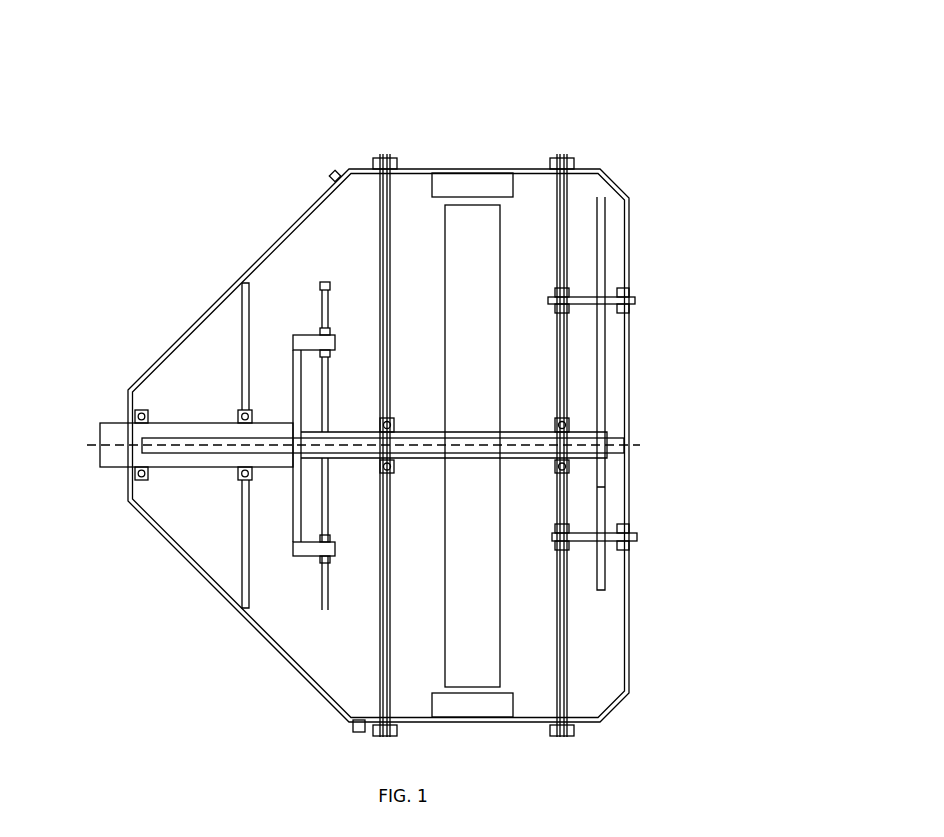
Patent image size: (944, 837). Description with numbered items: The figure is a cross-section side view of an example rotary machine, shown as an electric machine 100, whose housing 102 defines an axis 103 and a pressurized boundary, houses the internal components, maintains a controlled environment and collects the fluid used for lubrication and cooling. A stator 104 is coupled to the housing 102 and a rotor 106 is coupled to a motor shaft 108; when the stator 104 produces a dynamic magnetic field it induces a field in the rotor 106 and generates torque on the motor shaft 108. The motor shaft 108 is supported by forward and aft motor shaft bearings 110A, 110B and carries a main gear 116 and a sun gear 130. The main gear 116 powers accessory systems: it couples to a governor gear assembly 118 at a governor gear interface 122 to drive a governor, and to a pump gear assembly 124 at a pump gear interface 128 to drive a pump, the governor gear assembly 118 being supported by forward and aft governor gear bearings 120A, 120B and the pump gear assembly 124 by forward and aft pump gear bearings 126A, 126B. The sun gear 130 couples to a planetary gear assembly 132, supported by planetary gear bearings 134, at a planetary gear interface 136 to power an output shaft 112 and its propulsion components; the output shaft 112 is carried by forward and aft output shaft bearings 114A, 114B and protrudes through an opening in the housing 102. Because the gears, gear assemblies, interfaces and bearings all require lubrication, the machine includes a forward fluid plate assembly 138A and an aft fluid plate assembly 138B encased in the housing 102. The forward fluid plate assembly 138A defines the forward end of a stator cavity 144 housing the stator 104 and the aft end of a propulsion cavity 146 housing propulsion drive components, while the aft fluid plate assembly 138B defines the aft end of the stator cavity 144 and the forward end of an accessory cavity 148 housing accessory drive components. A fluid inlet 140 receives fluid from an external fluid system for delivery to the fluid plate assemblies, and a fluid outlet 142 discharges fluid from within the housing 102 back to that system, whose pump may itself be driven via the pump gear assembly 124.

The electric machine 100 is at (604, 54).
The housing 102 is at (615, 180).
The axis 103 is at (97, 445).
The stator 104 is at (468, 182).
The rotor 106 is at (482, 575).
The motor shaft 108 is at (325, 457).
The forward motor shaft bearing 110A is at (395, 423).
The aft motor shaft bearing 110B is at (563, 425).
The output shaft 112 is at (295, 418).
The forward output shaft bearing 114A is at (138, 412).
The aft output shaft bearing 114B is at (243, 414).
The main gear 116 is at (603, 430).
The governor gear assembly 118 is at (635, 300).
The forward governor gear bearing 120A is at (567, 292).
The aft governor gear bearing 120B is at (617, 290).
The governor gear interface 122 is at (620, 399).
The pump gear assembly 124 is at (600, 557).
The forward pump gear bearing 126A is at (567, 527).
The aft pump gear bearing 126B is at (617, 530).
The pump gear interface 128 is at (622, 476).
The sun gear 130 is at (323, 483).
The planetary gear assembly 132 is at (323, 283).
The planetary gear bearings 134 is at (320, 333).
The planetary gear interface 136 is at (303, 388).
The forward fluid plate assembly 138A is at (392, 144).
The aft fluid plate assembly 138B is at (572, 144).
The fluid inlet 140 is at (333, 173).
The fluid outlet 142 is at (355, 728).
The stator cavity 144 is at (412, 222).
The propulsion cavity 146 is at (346, 240).
The accessory cavity 148 is at (587, 183).